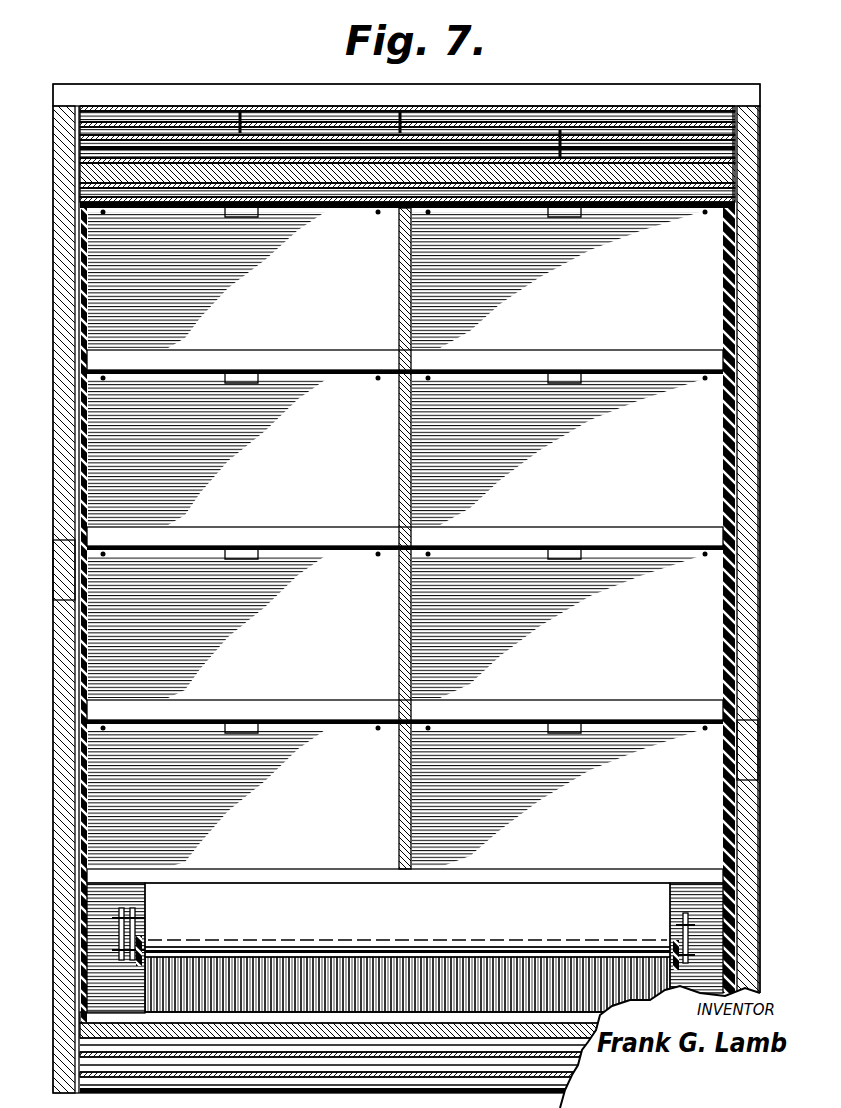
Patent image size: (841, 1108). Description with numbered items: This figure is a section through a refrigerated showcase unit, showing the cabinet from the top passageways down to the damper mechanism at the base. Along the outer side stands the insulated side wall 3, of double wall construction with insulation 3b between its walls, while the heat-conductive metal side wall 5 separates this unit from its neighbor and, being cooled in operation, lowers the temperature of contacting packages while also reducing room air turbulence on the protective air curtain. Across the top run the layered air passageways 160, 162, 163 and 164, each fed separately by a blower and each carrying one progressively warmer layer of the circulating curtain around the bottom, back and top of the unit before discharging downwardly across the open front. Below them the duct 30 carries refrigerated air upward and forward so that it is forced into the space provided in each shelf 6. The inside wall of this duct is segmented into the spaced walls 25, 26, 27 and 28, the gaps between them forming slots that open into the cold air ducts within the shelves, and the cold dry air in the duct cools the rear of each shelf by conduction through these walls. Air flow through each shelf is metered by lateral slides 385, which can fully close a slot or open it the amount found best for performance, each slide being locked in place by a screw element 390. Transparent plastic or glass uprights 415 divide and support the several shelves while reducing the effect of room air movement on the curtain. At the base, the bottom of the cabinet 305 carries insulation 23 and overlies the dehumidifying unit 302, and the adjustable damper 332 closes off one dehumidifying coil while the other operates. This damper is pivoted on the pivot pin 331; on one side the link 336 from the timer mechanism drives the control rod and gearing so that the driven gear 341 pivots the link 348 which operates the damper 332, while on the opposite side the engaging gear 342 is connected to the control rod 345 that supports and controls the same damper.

The insulated side wall 3 is at (55, 404).
The insulation 3b is at (66, 568).
The side wall 5 is at (87, 254).
The shelf 6 is at (303, 350).
The bottom insulation layer 23 is at (90, 1030).
The wall 25 is at (394, 280).
The wall 26 is at (394, 452).
The wall 27 is at (394, 627).
The wall 28 is at (394, 798).
The duct 30 is at (472, 207).
The passageway 160 is at (158, 106).
The passageway 162 is at (262, 122).
The passageway 163 is at (475, 140).
The passageway 164 is at (636, 198).
The dehumidifying unit 302 is at (470, 960).
The bottom of the cabinet 305 is at (320, 869).
The pivot pin 331 is at (685, 912).
The damper 332 is at (407, 915).
The link 336 is at (122, 920).
The gear 341 is at (133, 962).
The gear 342 is at (677, 970).
The control rod 345 is at (700, 938).
The link 348 is at (136, 925).
The lateral slide 385 is at (172, 218).
The screw element 390 is at (380, 214).
The upright 415 is at (412, 466).